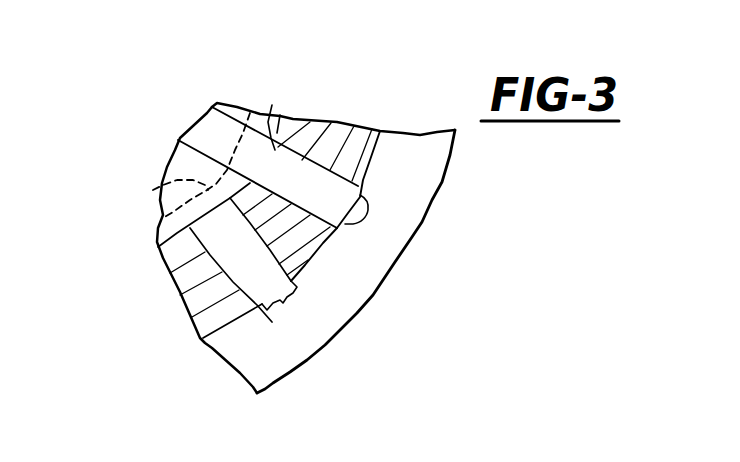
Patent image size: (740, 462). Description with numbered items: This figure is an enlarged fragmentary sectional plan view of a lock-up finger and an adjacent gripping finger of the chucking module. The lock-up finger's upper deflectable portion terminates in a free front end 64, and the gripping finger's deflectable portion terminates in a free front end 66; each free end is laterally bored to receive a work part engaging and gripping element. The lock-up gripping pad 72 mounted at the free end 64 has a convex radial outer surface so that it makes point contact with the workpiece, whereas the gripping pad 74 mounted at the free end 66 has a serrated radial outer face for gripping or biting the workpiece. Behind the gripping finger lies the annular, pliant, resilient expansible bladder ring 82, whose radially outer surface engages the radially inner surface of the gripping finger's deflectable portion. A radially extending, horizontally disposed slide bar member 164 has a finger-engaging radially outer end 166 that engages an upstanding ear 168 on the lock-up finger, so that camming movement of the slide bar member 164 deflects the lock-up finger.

The free front end 64 is at (337, 187).
The free front end 66 is at (232, 251).
The lock-up gripping pad 72 is at (362, 222).
The gripping pad 74 is at (283, 303).
The bladder ring 82 is at (153, 190).
The slide bar member 164 is at (212, 120).
The finger-engaging radially outer end 166 is at (272, 105).
The upstanding ear 168 is at (280, 115).